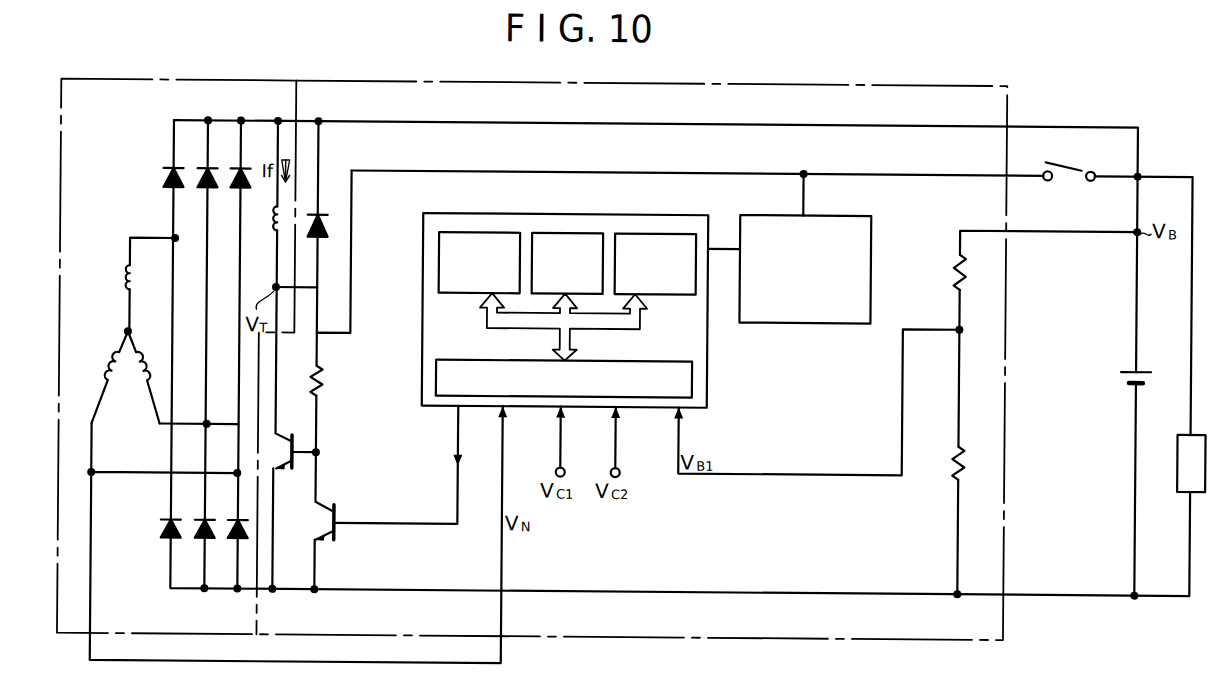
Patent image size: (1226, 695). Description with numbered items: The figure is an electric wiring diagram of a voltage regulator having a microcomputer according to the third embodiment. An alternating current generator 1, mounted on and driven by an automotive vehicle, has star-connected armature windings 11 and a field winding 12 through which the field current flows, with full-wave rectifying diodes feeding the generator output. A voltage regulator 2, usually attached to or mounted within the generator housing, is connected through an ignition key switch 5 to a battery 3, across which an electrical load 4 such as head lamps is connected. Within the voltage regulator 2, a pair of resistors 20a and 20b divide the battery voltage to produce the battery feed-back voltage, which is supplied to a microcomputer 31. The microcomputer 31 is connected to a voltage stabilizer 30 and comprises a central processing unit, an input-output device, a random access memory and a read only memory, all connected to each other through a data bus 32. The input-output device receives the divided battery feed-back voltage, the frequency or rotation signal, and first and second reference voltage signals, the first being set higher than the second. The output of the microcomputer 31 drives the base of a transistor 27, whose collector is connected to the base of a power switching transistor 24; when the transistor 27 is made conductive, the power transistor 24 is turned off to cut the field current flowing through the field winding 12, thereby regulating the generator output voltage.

The alternating current generator 1 is at (161, 79).
The voltage regulator 2 is at (461, 78).
The battery 3 is at (1150, 366).
The electrical load 4 is at (1180, 485).
The ignition key switch 5 is at (1068, 158).
The armature windings 11 is at (126, 277).
The field winding 12 is at (274, 232).
The resistor 20a is at (955, 271).
The resistor 20b is at (952, 468).
The power transistor 24 is at (285, 470).
The transistor 27 is at (326, 544).
The voltage stabilizer 30 is at (832, 318).
The microcomputer 31 is at (710, 345).
The data bus 32 is at (623, 326).